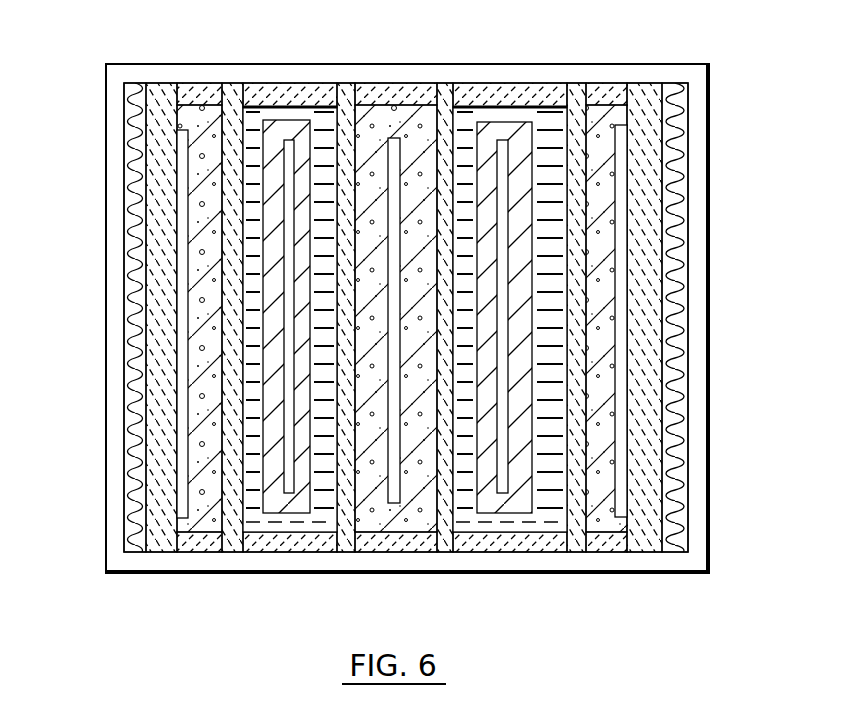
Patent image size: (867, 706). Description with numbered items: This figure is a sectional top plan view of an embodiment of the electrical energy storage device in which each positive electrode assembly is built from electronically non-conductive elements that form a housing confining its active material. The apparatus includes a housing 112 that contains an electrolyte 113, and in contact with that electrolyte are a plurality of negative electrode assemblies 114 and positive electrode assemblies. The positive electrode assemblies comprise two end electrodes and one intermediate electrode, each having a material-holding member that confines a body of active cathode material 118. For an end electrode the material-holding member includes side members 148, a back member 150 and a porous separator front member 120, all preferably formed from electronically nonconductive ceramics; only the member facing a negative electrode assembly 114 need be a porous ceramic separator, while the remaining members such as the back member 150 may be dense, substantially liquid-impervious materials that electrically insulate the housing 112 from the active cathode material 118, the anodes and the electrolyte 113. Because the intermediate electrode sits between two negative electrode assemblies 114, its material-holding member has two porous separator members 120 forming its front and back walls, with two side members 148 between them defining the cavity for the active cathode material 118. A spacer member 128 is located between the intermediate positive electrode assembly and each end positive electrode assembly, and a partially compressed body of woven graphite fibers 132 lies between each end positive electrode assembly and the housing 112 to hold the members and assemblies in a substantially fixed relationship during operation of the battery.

The housing 112 is at (710, 97).
The electrolyte 113 is at (550, 120).
The negative electrode assemblies 114 is at (455, 111).
The active cathode material 118 is at (377, 520).
The porous separator front member 120 is at (575, 544).
The spacer member 128 is at (272, 84).
The body of woven graphite fibers 132 is at (134, 172).
The side members 148 is at (192, 83).
The back member 150 is at (152, 265).